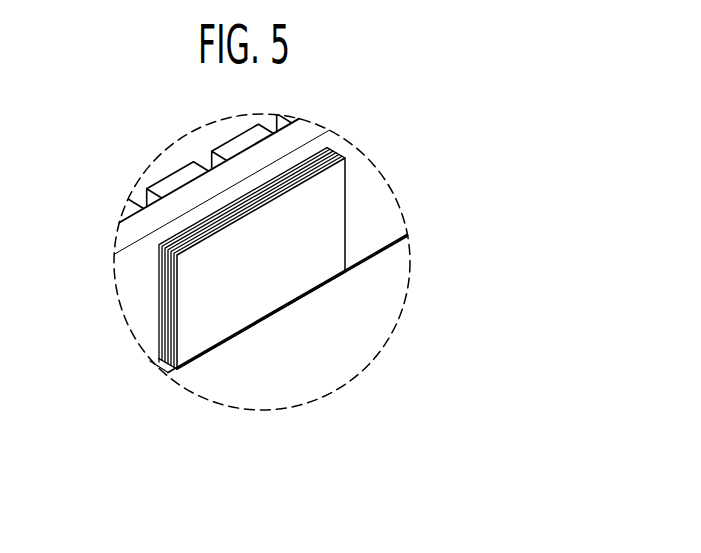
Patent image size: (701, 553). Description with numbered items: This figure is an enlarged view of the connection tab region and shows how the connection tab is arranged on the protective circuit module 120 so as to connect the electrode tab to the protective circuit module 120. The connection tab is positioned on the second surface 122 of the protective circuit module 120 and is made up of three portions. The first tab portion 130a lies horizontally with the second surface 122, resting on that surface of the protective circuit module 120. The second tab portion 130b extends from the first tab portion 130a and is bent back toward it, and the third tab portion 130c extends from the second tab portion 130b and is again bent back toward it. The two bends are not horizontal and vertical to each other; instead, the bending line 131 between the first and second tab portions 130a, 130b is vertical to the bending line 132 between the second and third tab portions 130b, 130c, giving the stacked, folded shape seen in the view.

The protective circuit module 120 is at (386, 276).
The second surface 122 is at (367, 222).
The first tab portion 130a is at (159, 260).
The second tab portion 130b is at (162, 282).
The third tab portion 130c is at (175, 314).
The bending line 131 is at (150, 361).
The bending line 132 is at (338, 152).